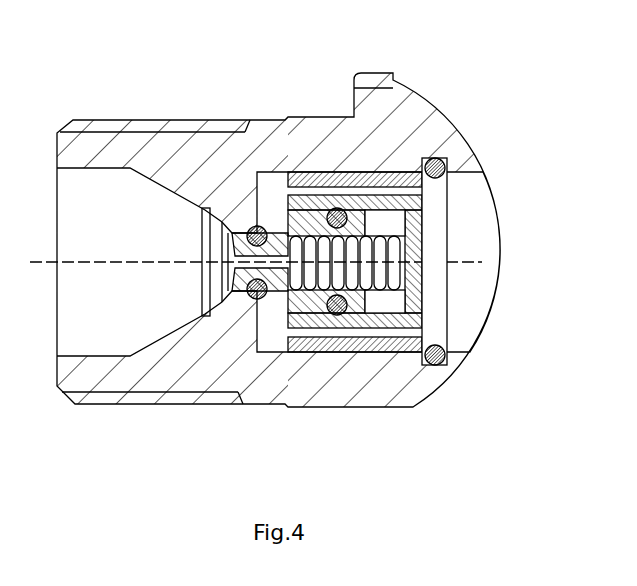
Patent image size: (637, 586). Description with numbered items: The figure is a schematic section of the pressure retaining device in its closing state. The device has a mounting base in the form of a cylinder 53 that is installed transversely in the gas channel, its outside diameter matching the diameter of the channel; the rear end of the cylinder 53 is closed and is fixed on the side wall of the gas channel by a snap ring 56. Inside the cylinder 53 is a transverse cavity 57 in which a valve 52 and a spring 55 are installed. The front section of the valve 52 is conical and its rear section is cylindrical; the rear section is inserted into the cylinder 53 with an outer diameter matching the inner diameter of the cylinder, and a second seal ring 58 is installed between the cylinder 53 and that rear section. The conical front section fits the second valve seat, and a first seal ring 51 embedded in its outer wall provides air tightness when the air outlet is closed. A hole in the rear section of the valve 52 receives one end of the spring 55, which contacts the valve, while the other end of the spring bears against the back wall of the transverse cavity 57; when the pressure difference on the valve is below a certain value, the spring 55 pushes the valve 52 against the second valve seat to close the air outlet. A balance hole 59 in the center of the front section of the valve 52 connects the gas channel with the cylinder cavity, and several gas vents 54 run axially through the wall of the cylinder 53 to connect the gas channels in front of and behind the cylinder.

The first seal ring 51 is at (254, 230).
The valve 52 is at (287, 218).
The cylinder 53 is at (318, 172).
The gas vent 54 is at (362, 196).
The spring 55 is at (380, 214).
The snap ring 56 is at (440, 158).
The transverse cavity 57 is at (395, 338).
The second seal ring 58 is at (395, 463).
The balance hole 59 is at (260, 296).